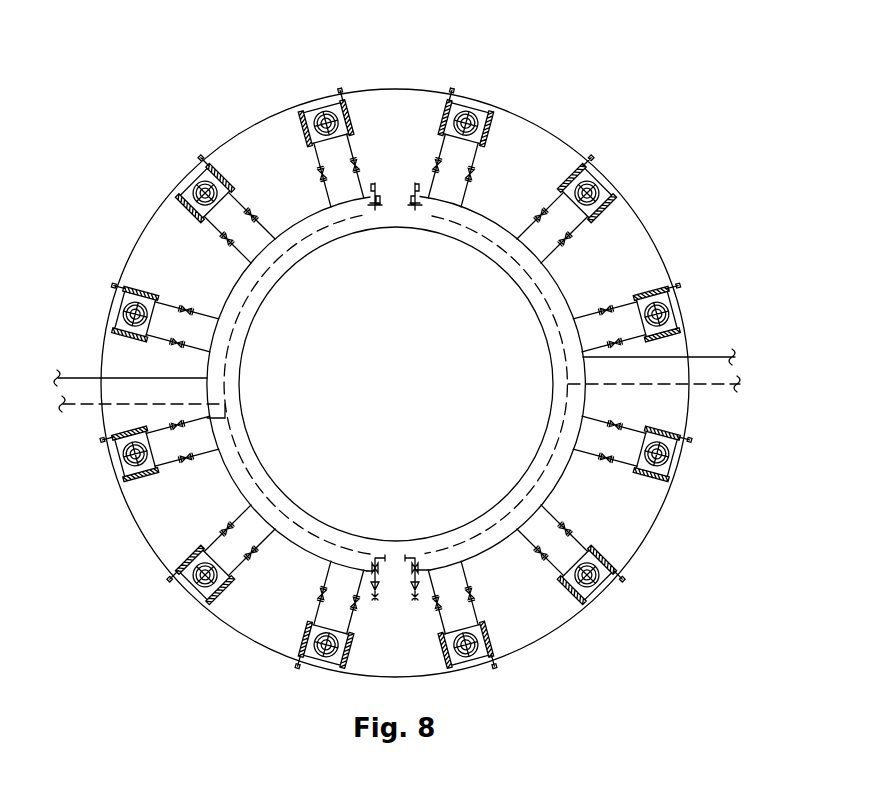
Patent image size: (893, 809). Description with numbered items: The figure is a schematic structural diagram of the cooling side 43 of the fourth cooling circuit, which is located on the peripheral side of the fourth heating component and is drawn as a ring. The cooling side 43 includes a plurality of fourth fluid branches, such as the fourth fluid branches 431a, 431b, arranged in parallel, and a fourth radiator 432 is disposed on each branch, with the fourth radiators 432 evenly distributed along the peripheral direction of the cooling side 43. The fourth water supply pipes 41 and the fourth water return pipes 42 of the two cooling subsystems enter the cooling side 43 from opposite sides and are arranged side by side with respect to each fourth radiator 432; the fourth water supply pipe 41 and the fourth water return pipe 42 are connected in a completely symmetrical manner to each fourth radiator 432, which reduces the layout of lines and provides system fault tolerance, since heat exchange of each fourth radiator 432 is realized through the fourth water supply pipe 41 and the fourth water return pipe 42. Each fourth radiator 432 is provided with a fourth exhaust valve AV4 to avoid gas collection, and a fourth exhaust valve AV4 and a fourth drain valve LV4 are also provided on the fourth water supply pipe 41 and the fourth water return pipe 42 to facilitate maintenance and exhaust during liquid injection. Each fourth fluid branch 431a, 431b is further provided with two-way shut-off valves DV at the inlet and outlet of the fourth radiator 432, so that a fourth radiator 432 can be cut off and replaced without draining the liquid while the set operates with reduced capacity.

The cooling side 43 is at (397, 51).
The fourth water supply pipe 41 is at (88, 377).
The fourth water return pipe 42 is at (92, 408).
The fourth fluid branch 431a is at (551, 197).
The fourth fluid branch 431b is at (560, 236).
The fourth radiator 432 is at (588, 190).
The fourth exhaust valve AV4 is at (449, 92).
The two-way shut-off valve DV is at (247, 213).
The fourth drain valve LV4 is at (414, 601).